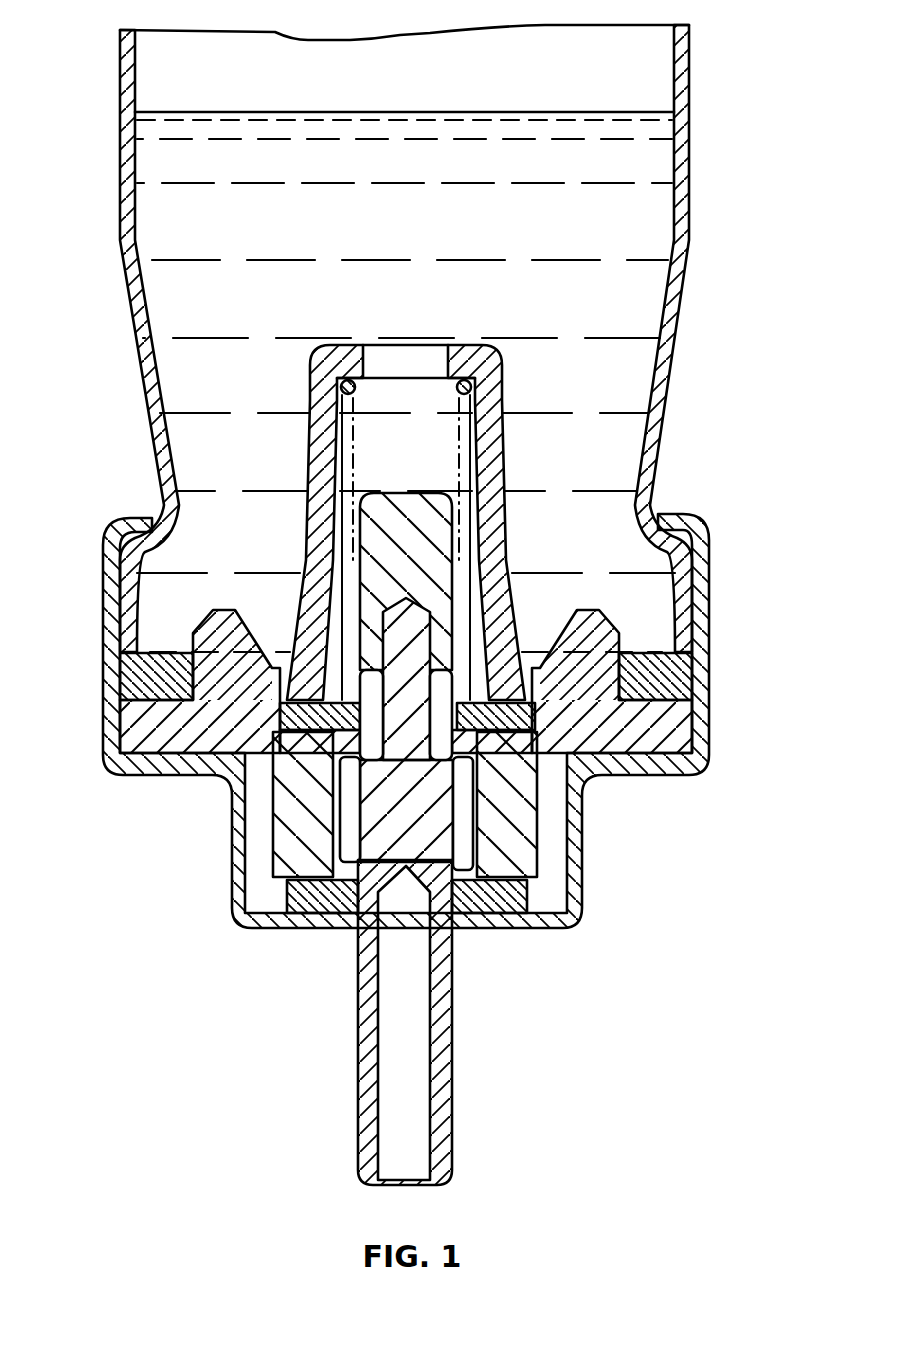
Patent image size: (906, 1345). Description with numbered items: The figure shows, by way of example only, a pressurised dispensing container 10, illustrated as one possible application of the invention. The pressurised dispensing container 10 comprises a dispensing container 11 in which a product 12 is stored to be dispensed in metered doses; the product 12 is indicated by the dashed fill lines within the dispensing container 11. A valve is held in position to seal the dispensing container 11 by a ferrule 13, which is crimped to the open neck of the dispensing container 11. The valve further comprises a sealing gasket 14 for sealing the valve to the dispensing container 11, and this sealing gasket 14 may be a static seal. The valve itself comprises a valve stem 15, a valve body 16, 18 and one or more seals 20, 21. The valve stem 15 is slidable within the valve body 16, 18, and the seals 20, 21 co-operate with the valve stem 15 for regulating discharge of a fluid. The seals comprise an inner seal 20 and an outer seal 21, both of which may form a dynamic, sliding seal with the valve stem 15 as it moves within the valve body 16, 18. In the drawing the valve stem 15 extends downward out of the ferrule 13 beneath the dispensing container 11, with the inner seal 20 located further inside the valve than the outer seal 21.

The pressurised dispensing container 10 is at (722, 420).
The dispensing container 11 is at (673, 122).
The product 12 is at (640, 240).
The ferrule 13 is at (583, 893).
The sealing gasket 14 is at (696, 657).
The valve stem 15 is at (452, 1050).
The valve body 16 is at (290, 812).
The valve body 18 is at (148, 736).
The inner seal 20 is at (515, 712).
The outer seal 21 is at (500, 930).